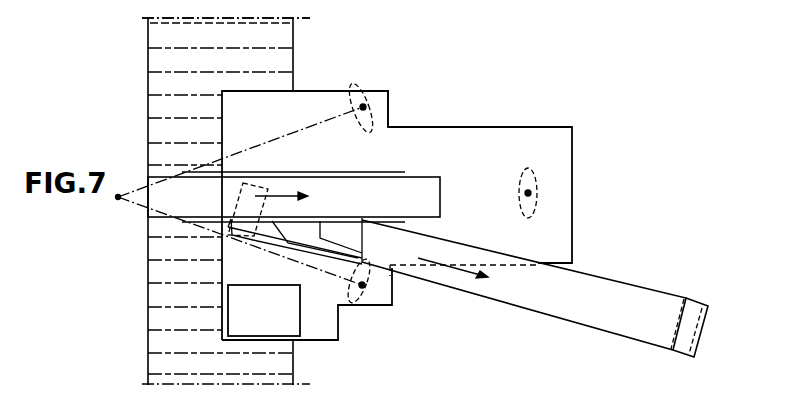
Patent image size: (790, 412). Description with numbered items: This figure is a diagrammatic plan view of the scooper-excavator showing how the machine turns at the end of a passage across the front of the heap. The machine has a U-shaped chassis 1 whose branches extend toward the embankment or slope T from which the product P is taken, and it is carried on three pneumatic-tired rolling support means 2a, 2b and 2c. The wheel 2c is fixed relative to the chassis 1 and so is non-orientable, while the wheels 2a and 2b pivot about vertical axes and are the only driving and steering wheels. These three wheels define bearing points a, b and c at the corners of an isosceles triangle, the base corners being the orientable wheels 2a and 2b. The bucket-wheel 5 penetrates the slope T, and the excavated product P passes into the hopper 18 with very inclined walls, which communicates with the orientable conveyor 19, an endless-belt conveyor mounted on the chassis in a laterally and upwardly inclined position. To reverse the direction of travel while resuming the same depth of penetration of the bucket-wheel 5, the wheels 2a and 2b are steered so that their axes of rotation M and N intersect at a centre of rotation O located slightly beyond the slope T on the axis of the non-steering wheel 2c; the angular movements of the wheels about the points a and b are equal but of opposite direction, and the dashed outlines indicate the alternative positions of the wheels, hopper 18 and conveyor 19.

The product P is at (167, 62).
The slope T is at (278, 63).
The axis of rotation of wheel 2a M is at (293, 132).
The axis of rotation of wheel 2b N is at (288, 258).
The centre of rotation O is at (118, 200).
The bearing point a is at (360, 112).
The bearing point b is at (359, 285).
The bearing point c is at (532, 194).
The rolling support means 2a is at (355, 83).
The rolling support means 2b is at (354, 303).
The rolling support means 2c is at (522, 170).
The chassis 1 is at (316, 342).
The bucket-wheel 5 is at (413, 178).
The hopper 18 is at (303, 233).
The orientable conveyor 19 is at (611, 284).